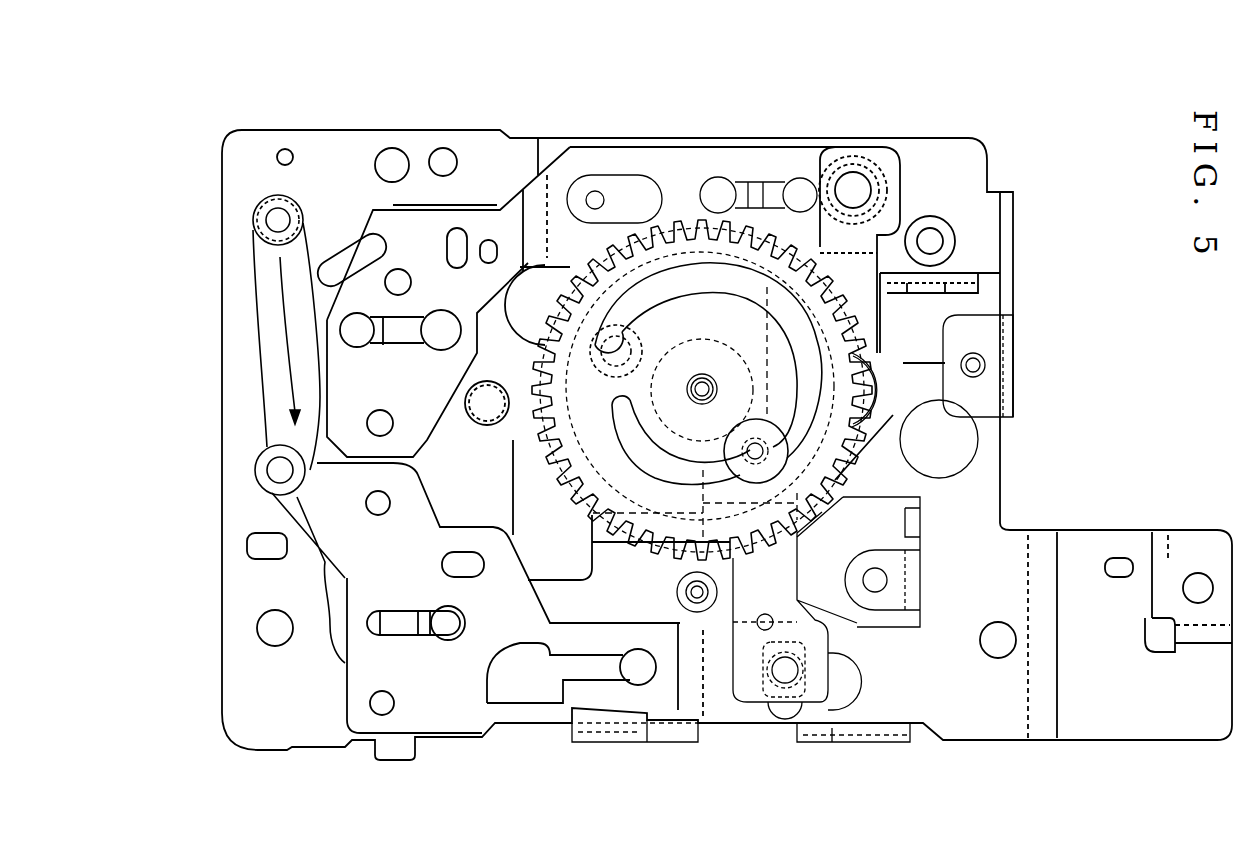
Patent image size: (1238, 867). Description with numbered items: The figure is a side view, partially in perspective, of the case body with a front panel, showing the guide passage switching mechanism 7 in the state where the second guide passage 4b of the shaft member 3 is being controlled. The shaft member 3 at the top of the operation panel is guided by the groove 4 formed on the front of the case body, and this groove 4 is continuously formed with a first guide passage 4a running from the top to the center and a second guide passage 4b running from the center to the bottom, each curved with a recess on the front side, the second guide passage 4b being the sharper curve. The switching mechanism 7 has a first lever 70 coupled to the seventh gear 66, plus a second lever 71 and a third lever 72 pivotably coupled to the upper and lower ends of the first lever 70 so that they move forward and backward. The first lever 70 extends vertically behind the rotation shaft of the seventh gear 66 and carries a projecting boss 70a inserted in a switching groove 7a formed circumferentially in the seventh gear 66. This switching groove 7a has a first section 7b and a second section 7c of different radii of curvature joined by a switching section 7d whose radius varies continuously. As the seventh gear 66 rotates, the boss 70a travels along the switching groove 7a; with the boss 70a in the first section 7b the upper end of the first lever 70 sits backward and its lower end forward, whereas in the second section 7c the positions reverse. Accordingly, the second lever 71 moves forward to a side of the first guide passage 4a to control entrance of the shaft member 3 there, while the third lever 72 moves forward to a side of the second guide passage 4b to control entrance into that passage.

The shaft member 3 is at (258, 472).
The groove 4 is at (250, 253).
The first guide passage 4a is at (260, 347).
The second guide passage 4b is at (323, 568).
The guide passage switching mechanism 7 is at (910, 203).
The switching groove 7a is at (878, 332).
The first section 7b is at (690, 455).
The second section 7c is at (637, 265).
The switching section 7d is at (765, 452).
The seventh gear 66 is at (760, 223).
The first lever 70 is at (878, 315).
The projecting boss 70a is at (903, 452).
The second lever 71 is at (693, 152).
The third lever 72 is at (745, 723).